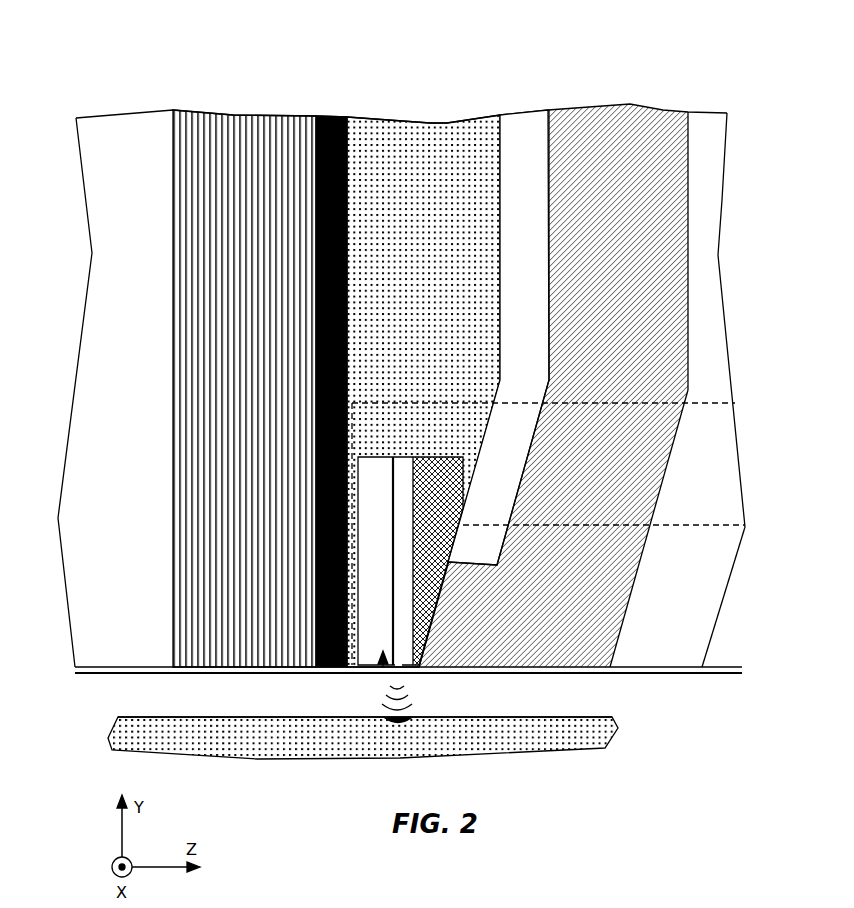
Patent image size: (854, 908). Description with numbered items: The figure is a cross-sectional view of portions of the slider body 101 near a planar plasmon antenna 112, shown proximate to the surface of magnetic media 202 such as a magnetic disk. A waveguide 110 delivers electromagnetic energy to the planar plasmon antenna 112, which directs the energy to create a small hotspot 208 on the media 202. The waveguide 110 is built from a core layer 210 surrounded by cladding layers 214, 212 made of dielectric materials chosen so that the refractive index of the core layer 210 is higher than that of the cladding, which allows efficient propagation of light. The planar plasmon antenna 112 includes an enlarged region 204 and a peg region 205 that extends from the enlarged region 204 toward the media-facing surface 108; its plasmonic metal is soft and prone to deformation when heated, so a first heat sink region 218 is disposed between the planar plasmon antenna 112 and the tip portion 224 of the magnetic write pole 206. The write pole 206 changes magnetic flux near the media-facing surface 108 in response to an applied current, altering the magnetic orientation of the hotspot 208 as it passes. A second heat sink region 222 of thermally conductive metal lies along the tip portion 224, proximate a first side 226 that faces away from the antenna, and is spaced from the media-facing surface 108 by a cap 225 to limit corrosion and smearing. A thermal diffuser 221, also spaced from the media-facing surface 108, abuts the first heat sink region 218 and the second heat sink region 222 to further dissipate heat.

The slider body 101 is at (108, 54).
The waveguide 110 is at (336, 355).
The cladding layer 214 is at (258, 113).
The core layer 210 is at (330, 116).
The cladding layer 212 is at (423, 372).
The thermal diffuser 221 is at (510, 122).
The magnetic write pole 206 is at (608, 107).
The first heat sink region 218 is at (557, 548).
The tip portion 224 is at (535, 572).
The first side 226 is at (620, 624).
The second heat sink region 222 is at (725, 468).
The cap 225 is at (705, 588).
The enlarged region 204 is at (410, 449).
The planar plasmon antenna 112 is at (380, 673).
The media-facing surface 108 is at (655, 677).
The peg region 205 is at (403, 675).
The magnetic media 202 is at (361, 751).
The hotspot 208 is at (373, 723).